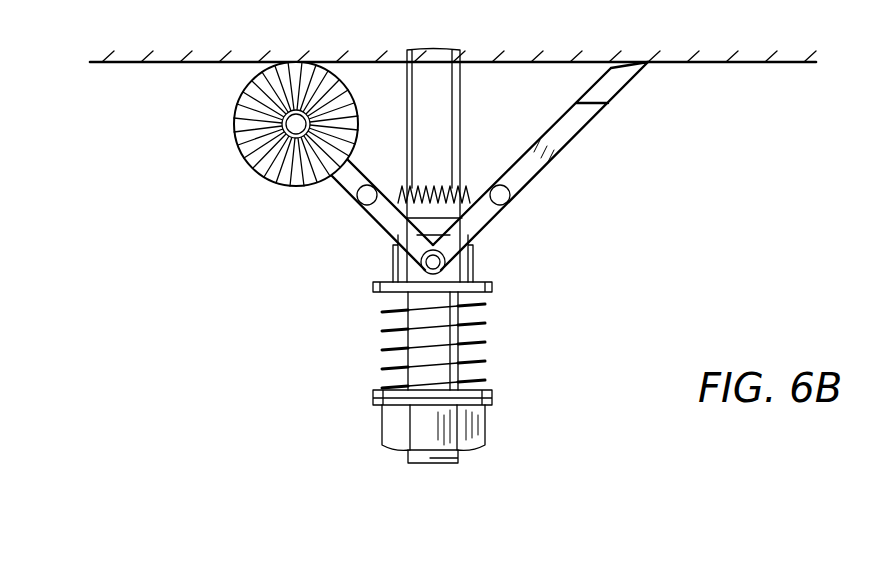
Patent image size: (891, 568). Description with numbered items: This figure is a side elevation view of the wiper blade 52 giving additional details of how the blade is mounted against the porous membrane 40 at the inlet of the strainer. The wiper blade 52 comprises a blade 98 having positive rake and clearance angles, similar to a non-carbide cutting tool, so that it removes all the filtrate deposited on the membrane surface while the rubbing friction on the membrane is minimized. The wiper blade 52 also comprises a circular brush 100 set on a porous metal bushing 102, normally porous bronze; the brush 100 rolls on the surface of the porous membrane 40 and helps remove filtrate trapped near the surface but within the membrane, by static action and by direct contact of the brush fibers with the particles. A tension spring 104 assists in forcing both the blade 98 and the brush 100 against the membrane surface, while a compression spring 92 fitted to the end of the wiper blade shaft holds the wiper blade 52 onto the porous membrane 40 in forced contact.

The porous membrane 40 is at (139, 62).
The wiper blade 52 is at (301, 265).
The compression spring 92 is at (480, 342).
The blade 98 is at (622, 86).
The brush 100 is at (245, 136).
The porous metal bushing 102 is at (273, 174).
The tension spring 104 is at (430, 193).